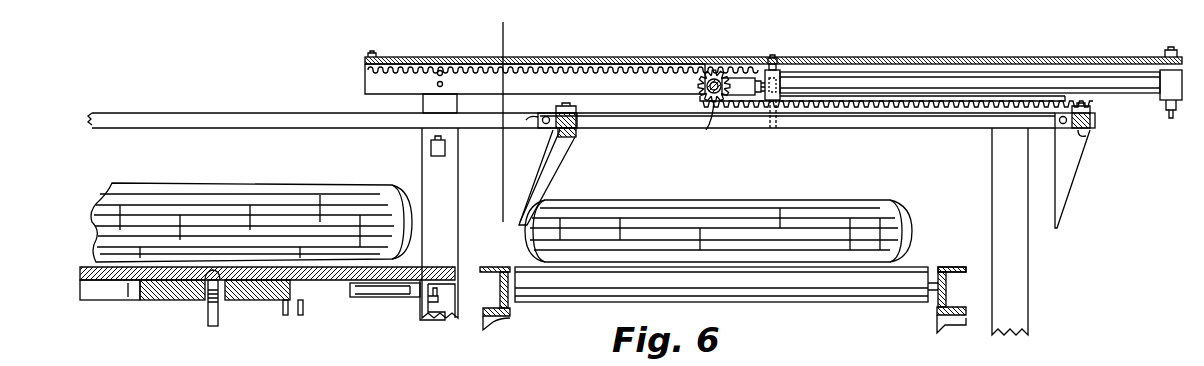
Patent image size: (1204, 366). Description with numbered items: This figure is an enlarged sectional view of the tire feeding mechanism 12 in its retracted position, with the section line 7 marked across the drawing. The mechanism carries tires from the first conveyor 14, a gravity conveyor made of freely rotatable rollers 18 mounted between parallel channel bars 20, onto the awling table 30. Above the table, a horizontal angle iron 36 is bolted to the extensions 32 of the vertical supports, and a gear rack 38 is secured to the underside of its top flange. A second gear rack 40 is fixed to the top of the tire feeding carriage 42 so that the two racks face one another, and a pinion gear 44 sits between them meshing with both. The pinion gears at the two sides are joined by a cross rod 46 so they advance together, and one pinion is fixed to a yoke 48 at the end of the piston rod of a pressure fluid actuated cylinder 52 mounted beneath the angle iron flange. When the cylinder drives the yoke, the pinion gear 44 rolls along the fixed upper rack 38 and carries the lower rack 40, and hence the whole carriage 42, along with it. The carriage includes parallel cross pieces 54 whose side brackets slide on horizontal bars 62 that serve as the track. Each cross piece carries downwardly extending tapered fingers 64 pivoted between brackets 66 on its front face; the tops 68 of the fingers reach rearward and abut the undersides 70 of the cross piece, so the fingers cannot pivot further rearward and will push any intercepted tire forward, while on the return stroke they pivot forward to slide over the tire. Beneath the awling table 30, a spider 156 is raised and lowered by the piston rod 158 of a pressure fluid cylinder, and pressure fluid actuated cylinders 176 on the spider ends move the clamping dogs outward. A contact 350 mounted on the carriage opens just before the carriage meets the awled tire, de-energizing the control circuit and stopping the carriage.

The section line 7- 7 is at (506, 17).
The feeding mechanism 12 is at (838, 0).
The first conveyor 14 is at (950, 261).
The rollers 18 is at (814, 290).
The channel bars 20 is at (510, 312).
The awling table 30 is at (94, 282).
The extensions 32 is at (440, 196).
The angle irons 36 is at (866, 57).
The gear racks 38 is at (628, 86).
The gear racks 40 is at (970, 102).
The tire feeding carriage 42 is at (890, 113).
The pinion gear 44 is at (712, 70).
The cross rod 46 is at (716, 103).
The yoke 48 is at (762, 80).
The pressure fluid actuated cylinder 52 is at (905, 78).
The cross pieces 54 is at (580, 121).
The bars 62 is at (333, 126).
The tapered fingers 64 is at (540, 180).
The brackets 66 is at (538, 118).
The tops of the fingers 68 is at (570, 138).
The undersides 70 is at (560, 132).
The spider 156 is at (174, 302).
The piston rod 158 is at (206, 318).
The pressure fluid actuated cylinders 176 is at (380, 300).
The contact 350 is at (430, 148).